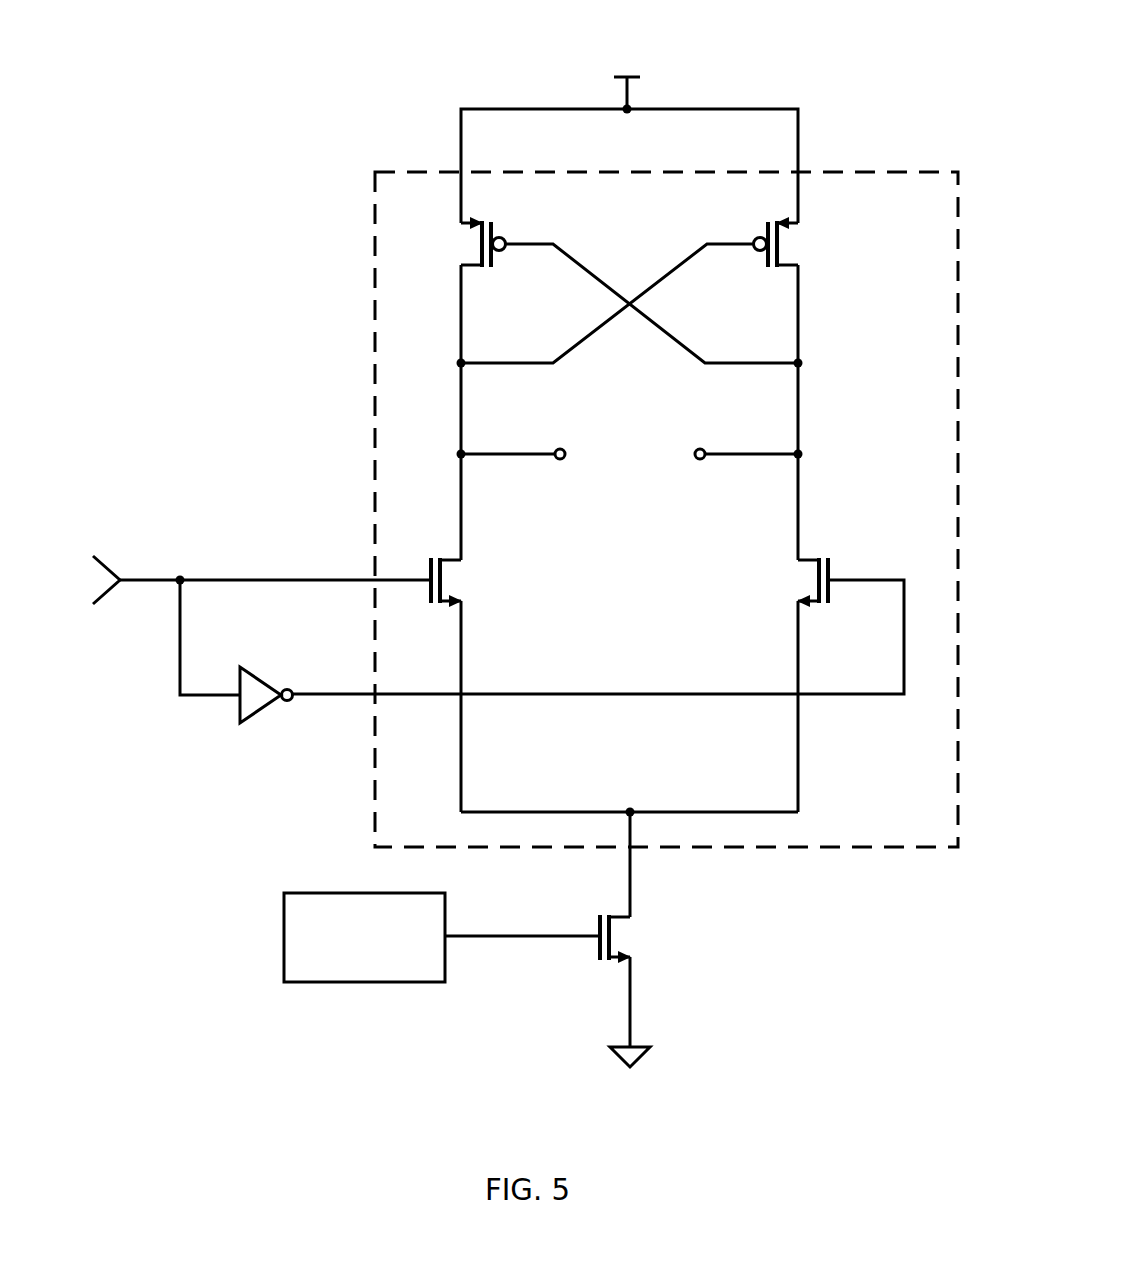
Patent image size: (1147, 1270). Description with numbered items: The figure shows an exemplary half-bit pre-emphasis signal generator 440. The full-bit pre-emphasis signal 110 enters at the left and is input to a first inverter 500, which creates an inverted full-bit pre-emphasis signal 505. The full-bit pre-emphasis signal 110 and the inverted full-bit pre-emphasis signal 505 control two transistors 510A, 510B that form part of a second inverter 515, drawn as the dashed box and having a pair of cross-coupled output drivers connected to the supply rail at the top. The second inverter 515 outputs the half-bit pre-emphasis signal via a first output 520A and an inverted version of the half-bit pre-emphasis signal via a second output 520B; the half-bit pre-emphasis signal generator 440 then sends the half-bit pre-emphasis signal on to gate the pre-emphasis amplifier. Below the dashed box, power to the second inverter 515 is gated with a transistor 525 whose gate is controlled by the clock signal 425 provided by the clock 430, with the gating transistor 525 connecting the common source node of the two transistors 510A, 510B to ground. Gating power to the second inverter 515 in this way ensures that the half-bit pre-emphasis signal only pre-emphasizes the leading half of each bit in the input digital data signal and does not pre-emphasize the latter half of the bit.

The half-bit pre-emphasis signal generator 440 is at (527, 533).
The full-bit pre-emphasis signal 110 is at (170, 512).
The first inverter 500 is at (263, 683).
The inverted full-bit pre-emphasis signal 505 is at (600, 660).
The transistor 510A is at (457, 557).
The transistor 510B is at (808, 558).
The second inverter 515 is at (907, 172).
The first output 520A is at (753, 457).
The second output 520B is at (497, 457).
The transistor 525 is at (623, 917).
The clock signal 425 is at (493, 935).
The clock 430 is at (410, 893).